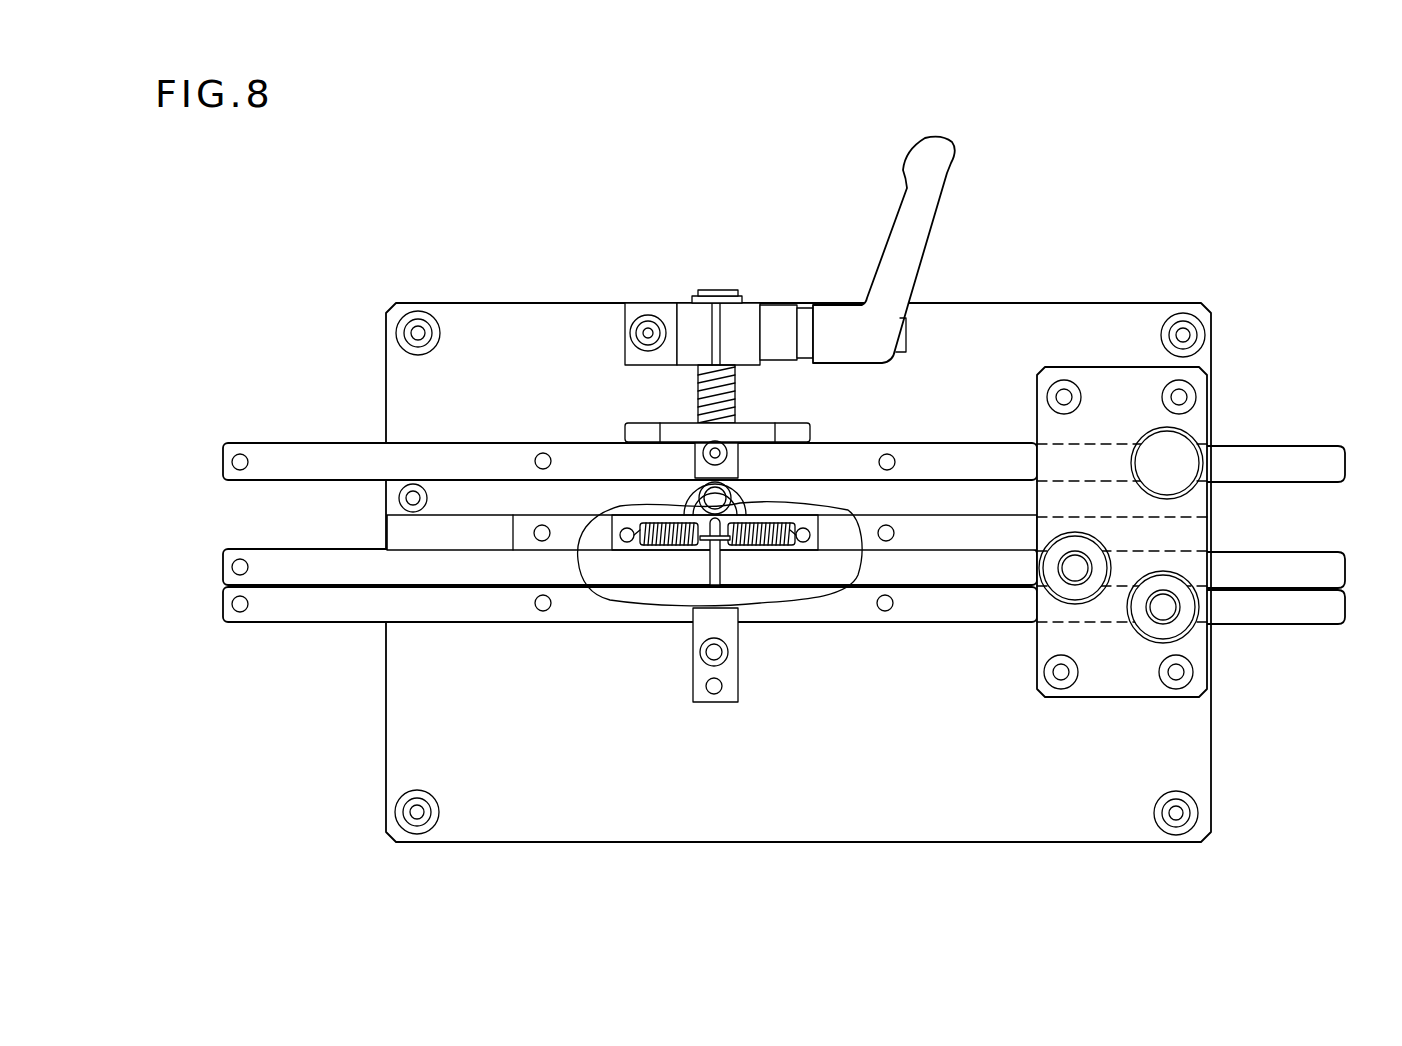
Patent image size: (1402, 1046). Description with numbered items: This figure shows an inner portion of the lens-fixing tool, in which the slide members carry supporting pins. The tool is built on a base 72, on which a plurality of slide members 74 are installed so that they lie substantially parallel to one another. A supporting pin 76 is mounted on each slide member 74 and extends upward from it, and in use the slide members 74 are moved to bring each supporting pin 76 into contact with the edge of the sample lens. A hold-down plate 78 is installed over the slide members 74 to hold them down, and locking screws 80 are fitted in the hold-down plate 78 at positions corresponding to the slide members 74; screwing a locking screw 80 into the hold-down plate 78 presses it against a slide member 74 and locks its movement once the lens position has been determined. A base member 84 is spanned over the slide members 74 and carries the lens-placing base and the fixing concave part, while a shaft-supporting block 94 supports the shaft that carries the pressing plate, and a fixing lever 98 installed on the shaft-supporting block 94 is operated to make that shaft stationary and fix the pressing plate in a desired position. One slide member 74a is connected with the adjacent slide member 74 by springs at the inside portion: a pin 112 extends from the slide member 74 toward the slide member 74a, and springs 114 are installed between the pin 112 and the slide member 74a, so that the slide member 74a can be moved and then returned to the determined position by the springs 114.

The base 72 is at (860, 783).
The slide member 74 is at (270, 462).
The slide member 74a is at (520, 537).
The supporting pin 76 is at (232, 459).
The hold-down plate 78 is at (1190, 422).
The locking screw 80 is at (1167, 490).
The base member 84 is at (707, 628).
The shaft-supporting block 94 is at (743, 323).
The fixing lever 98 is at (941, 198).
The pin 112 is at (715, 563).
The spring 114 is at (650, 522).